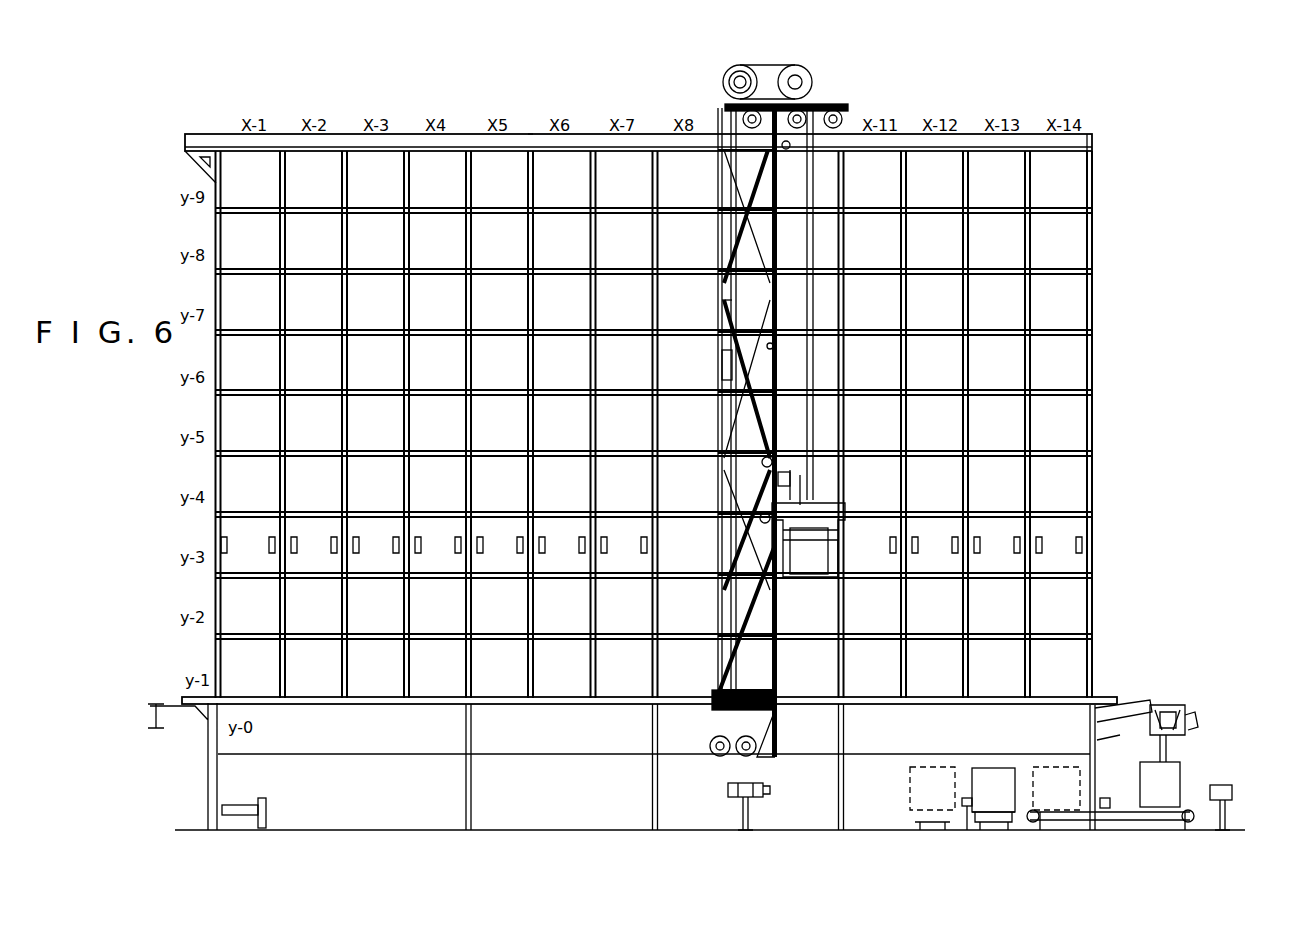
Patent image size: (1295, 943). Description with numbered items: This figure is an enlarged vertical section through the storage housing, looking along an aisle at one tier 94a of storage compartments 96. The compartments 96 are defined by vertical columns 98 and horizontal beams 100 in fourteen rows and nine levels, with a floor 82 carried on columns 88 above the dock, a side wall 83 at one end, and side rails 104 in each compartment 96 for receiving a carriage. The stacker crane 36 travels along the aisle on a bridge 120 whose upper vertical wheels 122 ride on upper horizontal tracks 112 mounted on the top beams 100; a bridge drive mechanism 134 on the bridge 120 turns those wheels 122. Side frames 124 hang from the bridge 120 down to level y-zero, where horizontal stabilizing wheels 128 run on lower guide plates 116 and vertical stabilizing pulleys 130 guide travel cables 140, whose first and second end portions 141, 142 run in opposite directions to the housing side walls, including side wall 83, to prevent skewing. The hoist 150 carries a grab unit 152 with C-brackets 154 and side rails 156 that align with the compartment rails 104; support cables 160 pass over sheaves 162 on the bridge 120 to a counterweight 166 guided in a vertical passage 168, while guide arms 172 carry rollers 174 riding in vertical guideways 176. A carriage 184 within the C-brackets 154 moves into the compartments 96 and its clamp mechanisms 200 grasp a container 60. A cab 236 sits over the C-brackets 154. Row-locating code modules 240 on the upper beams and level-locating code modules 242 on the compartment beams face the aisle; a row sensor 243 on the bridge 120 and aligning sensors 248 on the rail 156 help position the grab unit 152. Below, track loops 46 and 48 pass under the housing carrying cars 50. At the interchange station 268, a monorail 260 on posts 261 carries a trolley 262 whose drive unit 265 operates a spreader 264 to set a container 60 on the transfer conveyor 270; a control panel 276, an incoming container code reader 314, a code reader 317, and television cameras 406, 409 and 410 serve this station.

The stacker crane 36 is at (736, 64).
The inside track loop 46 is at (295, 828).
The outside track loop 48 is at (382, 828).
The car 50 is at (992, 826).
The container 60 is at (790, 560).
The floor 82 is at (436, 704).
The side wall 83 is at (212, 650).
The column 88 is at (471, 805).
The tier 94a is at (1092, 133).
The storage compartment 96 is at (748, 450).
The vertical column 98 is at (406, 256).
The horizontal beam 100 is at (639, 268).
The side rail 104 is at (582, 555).
The upper horizontal track 112 is at (952, 133).
The lower guide plate 116 is at (790, 707).
The bridge 120 is at (826, 106).
The upper vertical wheel 122 is at (740, 112).
The side frame 124 is at (738, 218).
The horizontal stabilizing wheel 128 is at (712, 690).
The vertical stabilizing pulley 130 is at (735, 738).
The bridge drive mechanism 134 is at (808, 92).
The travel cable 140 is at (735, 598).
The first cable end portion 141 is at (575, 756).
The second cable end portion 142 is at (905, 755).
The hoist 150 is at (810, 480).
The grab unit 152 is at (848, 516).
The C-bracket 154 is at (848, 540).
The side rail 156 is at (840, 566).
The support cable 160 is at (812, 283).
The sheave 162 is at (793, 66).
The counterweight 166 is at (724, 370).
The vertical passage 168 is at (722, 308).
The guide arm 172 is at (760, 452).
The roller 174 is at (760, 458).
The vertical guideway 176 is at (778, 352).
The carriage 184 is at (832, 498).
The clamp mechanism 200 is at (805, 540).
The cab 236 is at (805, 450).
The row-locating code module 240 is at (524, 134).
The level-locating code module 242 is at (642, 392).
The row sensor 243 is at (790, 150).
The aligning sensor 248 is at (838, 534).
The monorail 260 is at (1165, 705).
The post 261 is at (210, 772).
The trolley 262 is at (1180, 712).
The spreader 264 is at (1160, 754).
The drive unit 265 is at (1198, 722).
The interchange station 268 is at (1207, 778).
The transfer conveyor 270 is at (238, 803).
The control panel 276 is at (1103, 830).
The incoming container code reader 314 is at (965, 798).
The code reader 317 is at (1110, 810).
The television camera 406 is at (740, 800).
The television camera 409 is at (758, 800).
The television camera 410 is at (1220, 785).